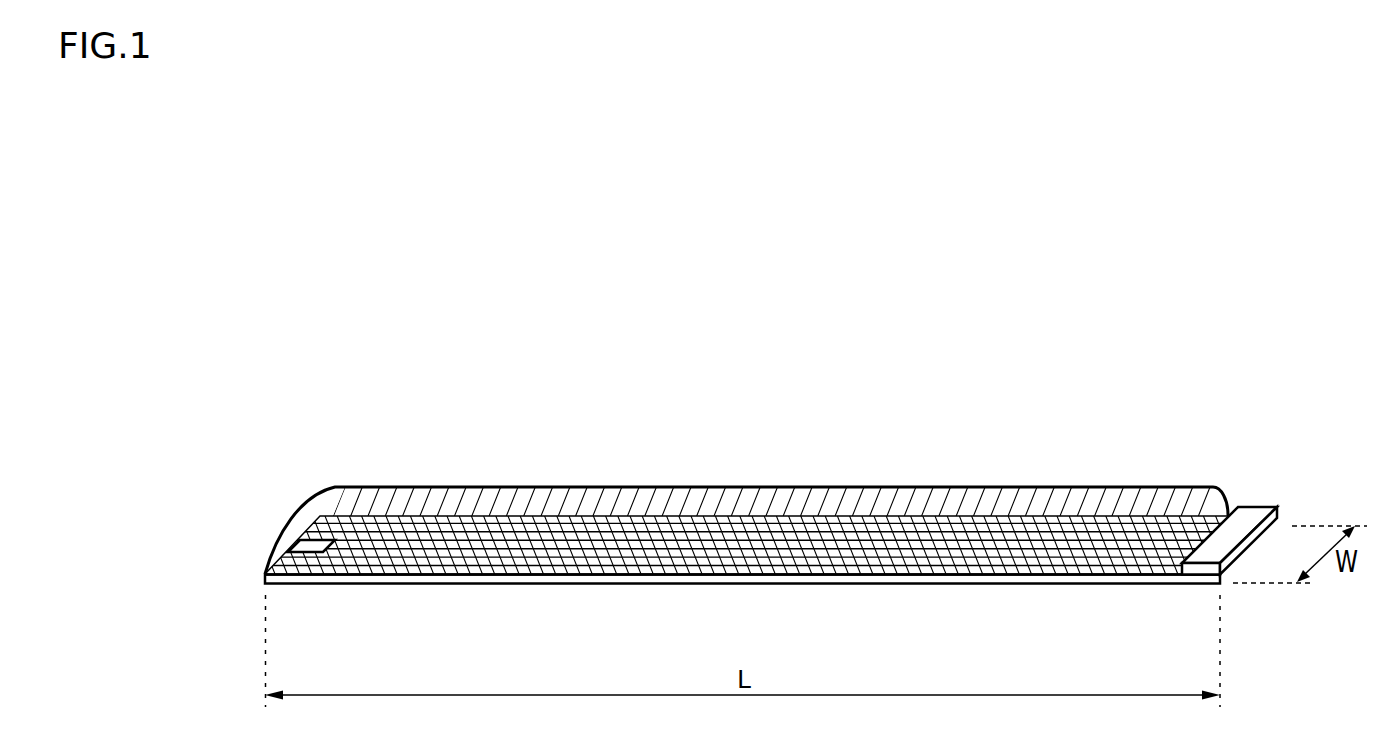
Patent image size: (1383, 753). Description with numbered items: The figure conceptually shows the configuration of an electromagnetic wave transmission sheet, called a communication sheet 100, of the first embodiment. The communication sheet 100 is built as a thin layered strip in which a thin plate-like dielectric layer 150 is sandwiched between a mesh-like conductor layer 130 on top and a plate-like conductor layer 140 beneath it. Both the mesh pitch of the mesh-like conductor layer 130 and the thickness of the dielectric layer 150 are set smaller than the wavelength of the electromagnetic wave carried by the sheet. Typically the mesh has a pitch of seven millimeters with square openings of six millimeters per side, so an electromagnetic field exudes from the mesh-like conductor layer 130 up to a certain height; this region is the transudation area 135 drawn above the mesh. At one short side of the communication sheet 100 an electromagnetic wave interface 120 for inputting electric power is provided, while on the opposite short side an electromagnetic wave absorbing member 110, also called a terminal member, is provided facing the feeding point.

The communication sheet 100 is at (893, 387).
The electromagnetic wave absorbing member 110 is at (1258, 505).
The electromagnetic wave interface 120 is at (320, 547).
The mesh-like conductor layer 130 is at (998, 512).
The transudation area 135 is at (693, 497).
The plate-like conductor layer 140 is at (985, 584).
The dielectric layer 150 is at (1015, 584).